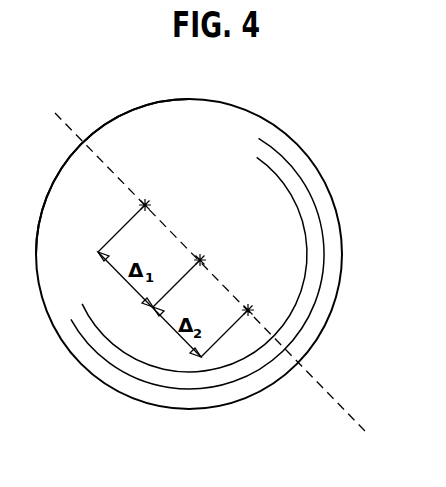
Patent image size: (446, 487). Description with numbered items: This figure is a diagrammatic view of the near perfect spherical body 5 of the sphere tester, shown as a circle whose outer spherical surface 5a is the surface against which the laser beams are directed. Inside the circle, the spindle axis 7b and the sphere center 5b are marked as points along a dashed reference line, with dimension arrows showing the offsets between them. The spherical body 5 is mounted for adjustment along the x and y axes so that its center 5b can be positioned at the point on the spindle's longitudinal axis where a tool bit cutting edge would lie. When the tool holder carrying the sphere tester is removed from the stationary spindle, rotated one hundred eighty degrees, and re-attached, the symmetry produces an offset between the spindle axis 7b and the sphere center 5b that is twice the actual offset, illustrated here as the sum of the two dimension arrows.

The spherical body 5 is at (280, 122).
The spherical surface 5a is at (143, 120).
The center of spherical body 5b is at (200, 260).
The spindle axis 7b is at (145, 205).